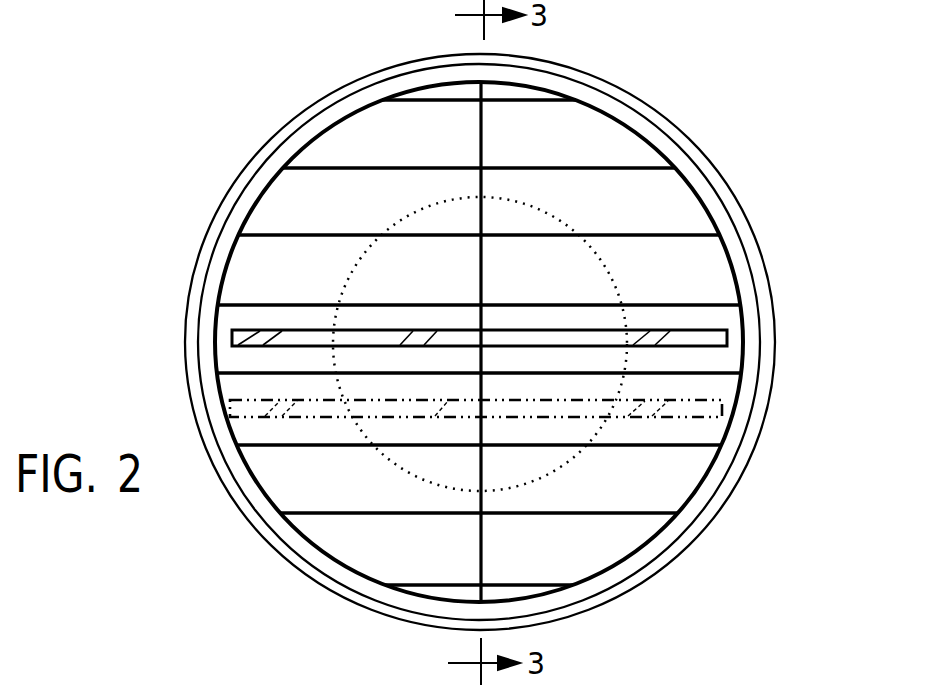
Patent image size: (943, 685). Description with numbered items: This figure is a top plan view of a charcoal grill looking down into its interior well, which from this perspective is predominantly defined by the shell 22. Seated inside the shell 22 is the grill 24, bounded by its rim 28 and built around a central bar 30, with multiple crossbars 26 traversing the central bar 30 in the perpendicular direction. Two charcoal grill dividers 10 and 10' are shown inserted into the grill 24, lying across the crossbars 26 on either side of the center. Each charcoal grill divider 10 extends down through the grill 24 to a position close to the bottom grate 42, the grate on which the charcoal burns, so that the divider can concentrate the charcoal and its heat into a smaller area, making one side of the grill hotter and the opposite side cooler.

The charcoal grill divider 10 is at (552, 273).
The charcoal grill divider 10' is at (554, 350).
The shell 22 is at (723, 190).
The grill 24 is at (580, 168).
The crossbars 26 is at (360, 167).
The rim 28 is at (233, 237).
The central bar 30 is at (483, 158).
The bottom grate 42 is at (572, 460).